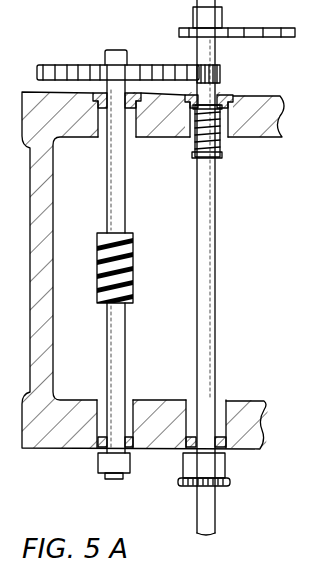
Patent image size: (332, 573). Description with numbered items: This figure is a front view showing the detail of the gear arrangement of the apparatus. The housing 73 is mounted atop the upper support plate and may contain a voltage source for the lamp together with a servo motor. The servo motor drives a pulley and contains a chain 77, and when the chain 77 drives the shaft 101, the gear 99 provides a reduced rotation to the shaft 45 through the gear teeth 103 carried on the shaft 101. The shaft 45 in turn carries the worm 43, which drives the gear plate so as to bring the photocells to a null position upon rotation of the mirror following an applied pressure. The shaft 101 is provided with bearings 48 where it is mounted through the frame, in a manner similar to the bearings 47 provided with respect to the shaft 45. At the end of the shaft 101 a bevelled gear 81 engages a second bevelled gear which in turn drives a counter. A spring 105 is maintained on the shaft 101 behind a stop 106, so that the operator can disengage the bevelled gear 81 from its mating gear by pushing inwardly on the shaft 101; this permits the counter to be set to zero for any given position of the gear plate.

The worm 43 is at (133, 258).
The shaft 45 is at (125, 360).
The bearings 47 is at (98, 100).
The bearings 48 is at (228, 97).
The housing 73 is at (331, 377).
The chain 77 is at (250, 28).
The bevelled gear 81 is at (229, 485).
The gear 99 is at (47, 65).
The shaft 101 is at (216, 322).
The gear teeth 103 is at (220, 74).
The spring 105 is at (221, 150).
The stop 106 is at (221, 160).